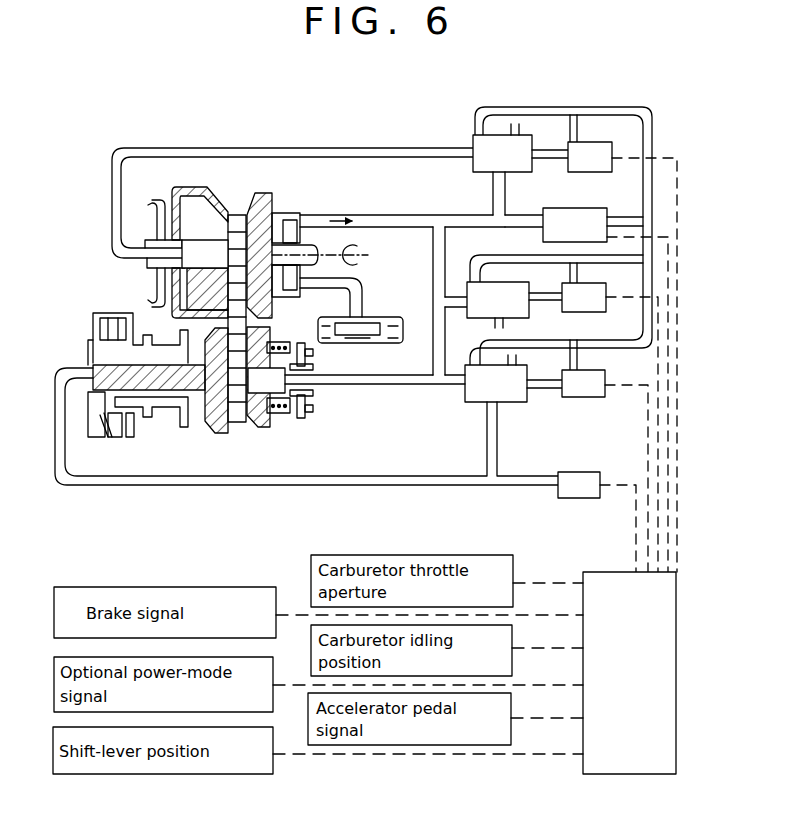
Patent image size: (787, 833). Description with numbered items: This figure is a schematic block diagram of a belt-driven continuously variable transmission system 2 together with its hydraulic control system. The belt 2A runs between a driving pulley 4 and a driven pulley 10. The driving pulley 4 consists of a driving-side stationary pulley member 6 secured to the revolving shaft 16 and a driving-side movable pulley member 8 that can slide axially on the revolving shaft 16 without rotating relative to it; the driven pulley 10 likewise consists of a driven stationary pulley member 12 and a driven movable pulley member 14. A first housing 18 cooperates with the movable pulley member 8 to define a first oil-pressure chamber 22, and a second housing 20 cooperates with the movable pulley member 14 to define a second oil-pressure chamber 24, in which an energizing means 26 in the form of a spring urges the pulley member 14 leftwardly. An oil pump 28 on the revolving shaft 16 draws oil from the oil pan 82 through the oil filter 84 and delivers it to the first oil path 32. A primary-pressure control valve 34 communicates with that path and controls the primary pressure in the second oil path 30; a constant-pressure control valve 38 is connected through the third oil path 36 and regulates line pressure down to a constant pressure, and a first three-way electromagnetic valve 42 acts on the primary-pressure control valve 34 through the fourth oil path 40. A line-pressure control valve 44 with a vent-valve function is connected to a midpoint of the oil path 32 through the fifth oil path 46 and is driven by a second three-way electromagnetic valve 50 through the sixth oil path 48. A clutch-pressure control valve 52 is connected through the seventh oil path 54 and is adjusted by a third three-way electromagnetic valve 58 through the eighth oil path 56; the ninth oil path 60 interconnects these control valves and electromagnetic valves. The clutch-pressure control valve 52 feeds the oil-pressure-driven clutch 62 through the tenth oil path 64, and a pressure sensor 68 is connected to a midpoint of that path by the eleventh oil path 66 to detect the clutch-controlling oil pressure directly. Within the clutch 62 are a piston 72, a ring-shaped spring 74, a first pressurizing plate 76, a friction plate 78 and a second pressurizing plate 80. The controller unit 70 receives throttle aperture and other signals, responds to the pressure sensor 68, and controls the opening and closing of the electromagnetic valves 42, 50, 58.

The belt-driven continuously variable transmission system 2 is at (652, 104).
The belt 2A is at (240, 220).
The driving pulley 4 is at (108, 258).
The driving-side stationary pulley member 6 is at (262, 216).
The driving-side movable pulley member 8 is at (215, 217).
The driven pulley 10 is at (312, 418).
The driven stationary pulley member 12 is at (223, 428).
The driven movable pulley member 14 is at (258, 420).
The revolving shaft 16 is at (296, 254).
The first housing 18 is at (178, 318).
The second housing 20 is at (297, 346).
The first oil-pressure chamber 22 is at (182, 286).
The second oil-pressure chamber 24 is at (276, 416).
The energizing means 26 is at (303, 418).
The oil pump 28 is at (298, 218).
The second oil path 30 is at (424, 148).
The first oil path 32 is at (432, 215).
The primary-pressure control valve 34 is at (502, 148).
The third oil path 36 is at (530, 222).
The constant-pressure control valve 38 is at (605, 390).
The fourth oil path 40 is at (548, 160).
The first 3-way electromagnetic valve 42 is at (622, 357).
The line-pressure control valve 44 is at (555, 291).
The fifth oil path 46 is at (462, 295).
The sixth oil path 48 is at (551, 301).
The second 3-way electromagnetic valve 50 is at (610, 427).
The clutch-pressure control valve 52 is at (521, 371).
The seventh oil path 54 is at (447, 384).
The eighth oil path 56 is at (544, 390).
The third three-way electromagnetic valve 58 is at (605, 471).
The ninth oil path 60 is at (654, 118).
The oil-pressure-driven clutch 62 is at (88, 345).
The tenth oil path 64 is at (355, 485).
The eleventh oil path 66 is at (533, 476).
The pressure sensor 68 is at (580, 472).
The controller unit 70 is at (676, 639).
The piston 72 is at (95, 399).
The ring-shaped spring 74 is at (96, 417).
The first pressurizing plate 76 is at (106, 430).
The friction plate 78 is at (130, 430).
The second pressurizing plate 80 is at (132, 428).
The oil pan 82 is at (384, 336).
The oil filter 84 is at (368, 325).